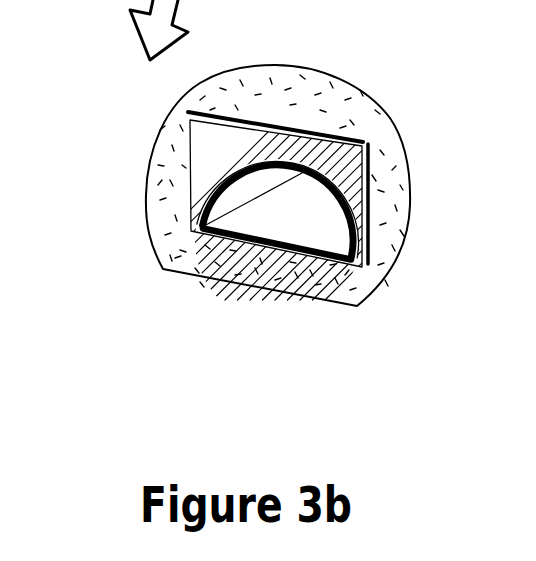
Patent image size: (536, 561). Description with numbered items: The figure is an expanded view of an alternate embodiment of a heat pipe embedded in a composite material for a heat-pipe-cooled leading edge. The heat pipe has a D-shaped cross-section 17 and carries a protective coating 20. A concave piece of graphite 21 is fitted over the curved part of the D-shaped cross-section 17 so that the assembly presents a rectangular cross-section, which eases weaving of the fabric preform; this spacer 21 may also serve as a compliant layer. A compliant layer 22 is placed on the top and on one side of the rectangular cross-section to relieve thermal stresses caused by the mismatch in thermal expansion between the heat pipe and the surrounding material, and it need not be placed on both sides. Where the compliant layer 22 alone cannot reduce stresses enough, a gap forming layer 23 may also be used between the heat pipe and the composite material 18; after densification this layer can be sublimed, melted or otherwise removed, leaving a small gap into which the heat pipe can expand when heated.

The D-shaped cross-section heat pipe 17 is at (345, 249).
The composite material 18 is at (228, 275).
The protective coating 20 is at (204, 225).
The concave piece of graphite 21 is at (336, 178).
The compliant layer 22 is at (360, 138).
The gap forming layer 23 is at (261, 127).